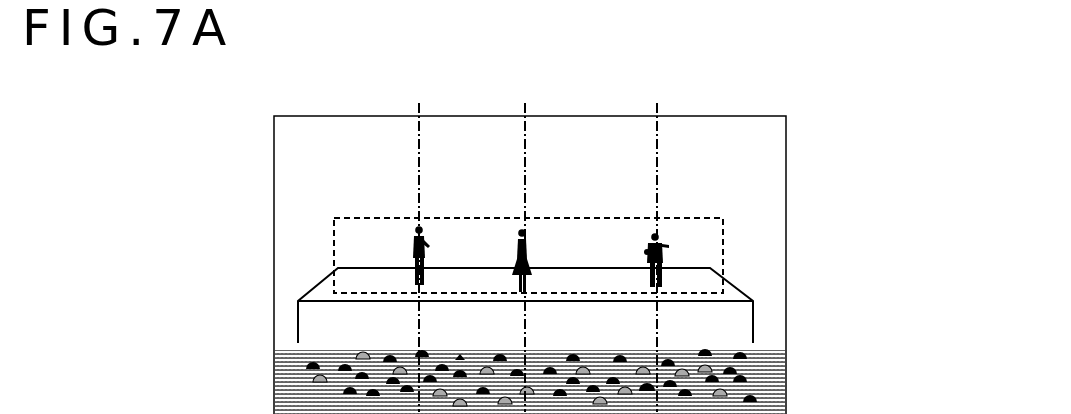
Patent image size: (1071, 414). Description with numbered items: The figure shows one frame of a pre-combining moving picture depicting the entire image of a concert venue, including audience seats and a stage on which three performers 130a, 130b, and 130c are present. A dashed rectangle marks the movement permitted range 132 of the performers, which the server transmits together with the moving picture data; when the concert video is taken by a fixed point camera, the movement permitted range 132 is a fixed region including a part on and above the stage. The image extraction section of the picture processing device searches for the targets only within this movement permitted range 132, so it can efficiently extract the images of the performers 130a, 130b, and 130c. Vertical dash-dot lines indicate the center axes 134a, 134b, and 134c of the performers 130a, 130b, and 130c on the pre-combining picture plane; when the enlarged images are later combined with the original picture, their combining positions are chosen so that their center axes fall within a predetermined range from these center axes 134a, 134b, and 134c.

The performer 130a is at (417, 238).
The performer 130b is at (528, 240).
The performer 130c is at (668, 246).
The movement permitted range 132 is at (727, 268).
The center axis 134a is at (426, 238).
The center axis 134b is at (524, 238).
The center axis 134c is at (659, 238).